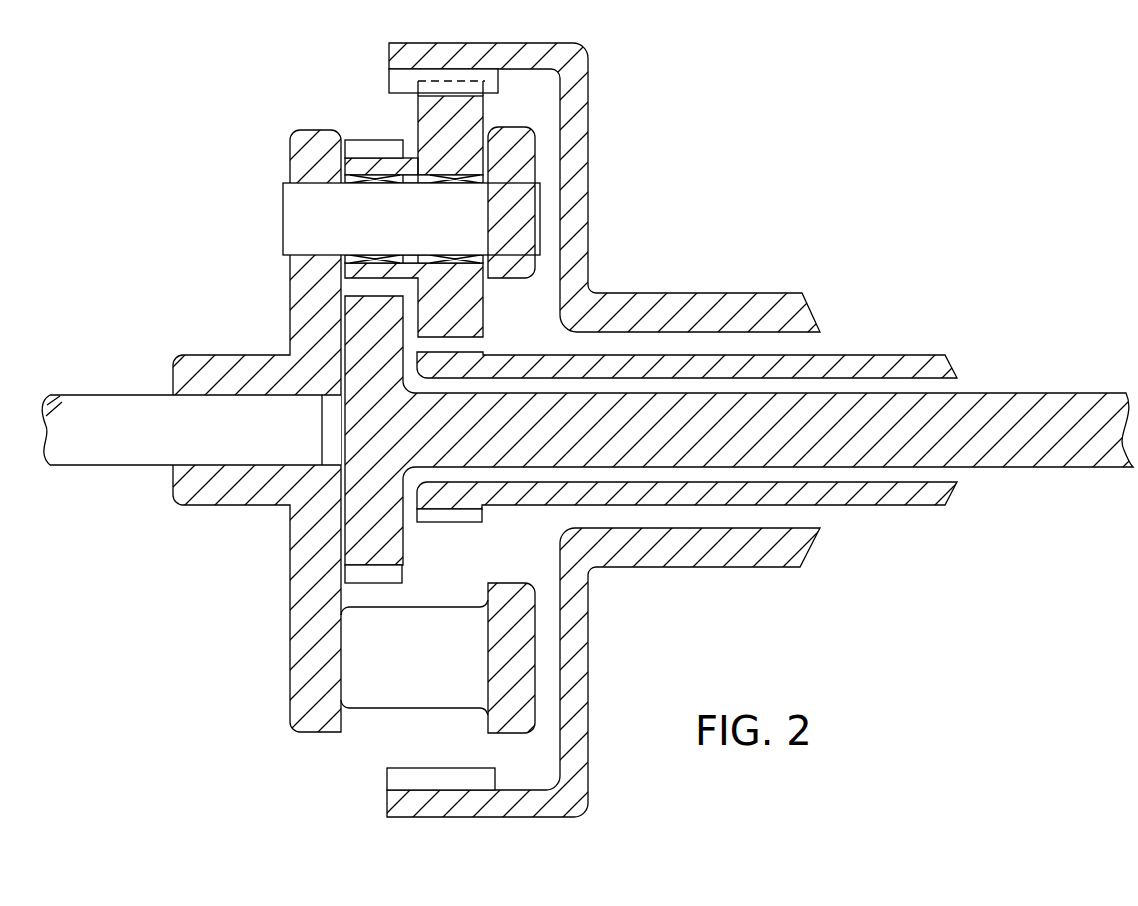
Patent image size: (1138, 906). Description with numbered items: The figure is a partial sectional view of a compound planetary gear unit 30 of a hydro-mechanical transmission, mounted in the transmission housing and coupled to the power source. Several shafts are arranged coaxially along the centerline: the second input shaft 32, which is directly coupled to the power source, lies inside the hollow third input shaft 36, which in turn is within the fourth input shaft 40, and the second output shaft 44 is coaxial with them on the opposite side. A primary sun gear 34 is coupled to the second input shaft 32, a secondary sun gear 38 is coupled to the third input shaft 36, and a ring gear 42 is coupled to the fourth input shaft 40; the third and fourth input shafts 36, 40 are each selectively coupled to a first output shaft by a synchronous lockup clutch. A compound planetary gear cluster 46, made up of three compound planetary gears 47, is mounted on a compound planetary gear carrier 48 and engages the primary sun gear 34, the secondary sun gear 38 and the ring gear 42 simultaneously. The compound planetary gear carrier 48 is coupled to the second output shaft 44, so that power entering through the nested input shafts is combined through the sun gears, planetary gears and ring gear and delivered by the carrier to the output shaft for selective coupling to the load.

The compound planetary gear unit 30 is at (972, 75).
The second input shaft 32 is at (1037, 467).
The primary sun gear 34 is at (370, 583).
The third input shaft 36 is at (888, 357).
The secondary sun gear 38 is at (463, 522).
The fourth input shaft 40 is at (742, 568).
The ring gear 42 is at (387, 802).
The second output shaft 44 is at (127, 467).
The compound planetary gear cluster 46 is at (358, 103).
The compound planetary gear 47 is at (483, 107).
The compound planetary gear carrier 48 is at (292, 298).